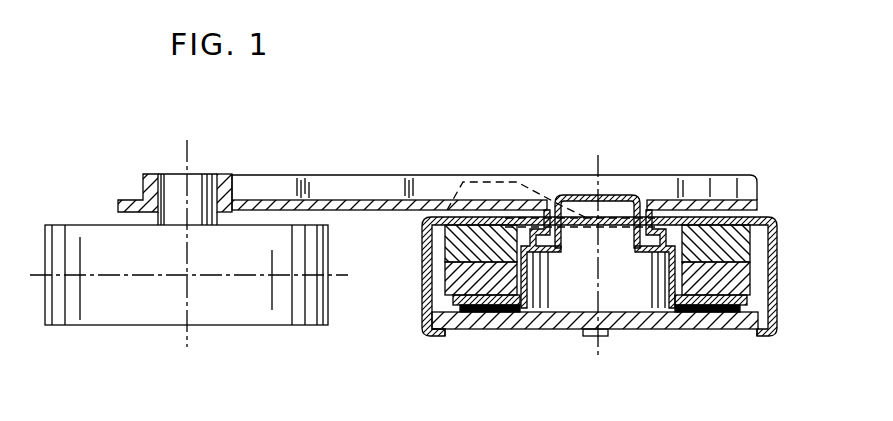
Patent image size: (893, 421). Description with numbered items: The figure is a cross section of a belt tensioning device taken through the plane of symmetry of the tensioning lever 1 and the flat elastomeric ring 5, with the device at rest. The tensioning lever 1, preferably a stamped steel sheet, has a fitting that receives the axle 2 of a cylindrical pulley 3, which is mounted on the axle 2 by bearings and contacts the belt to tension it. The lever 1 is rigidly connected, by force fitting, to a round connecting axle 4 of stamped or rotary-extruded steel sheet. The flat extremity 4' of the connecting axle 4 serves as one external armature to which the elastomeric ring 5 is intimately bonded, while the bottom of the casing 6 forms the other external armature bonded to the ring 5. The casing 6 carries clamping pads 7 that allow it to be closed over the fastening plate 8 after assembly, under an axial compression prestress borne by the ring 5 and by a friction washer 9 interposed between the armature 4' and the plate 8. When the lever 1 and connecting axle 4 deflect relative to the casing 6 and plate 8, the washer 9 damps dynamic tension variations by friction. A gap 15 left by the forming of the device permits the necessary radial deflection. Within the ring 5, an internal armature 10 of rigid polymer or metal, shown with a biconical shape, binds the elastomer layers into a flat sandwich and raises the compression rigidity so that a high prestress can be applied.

The tensioning lever 1 is at (322, 200).
The axle 2 is at (172, 187).
The pulley 3 is at (128, 305).
The connecting axle 4 is at (598, 212).
The flat extremity of the connecting axle 4' is at (644, 325).
The flat elastomeric ring 5 is at (745, 242).
The casing 6 is at (778, 288).
The clamping pads 7 is at (433, 340).
The fastening plate 8 is at (555, 318).
The friction washer 9 is at (490, 314).
The internal armature 10 is at (483, 215).
The gap 15 is at (435, 285).